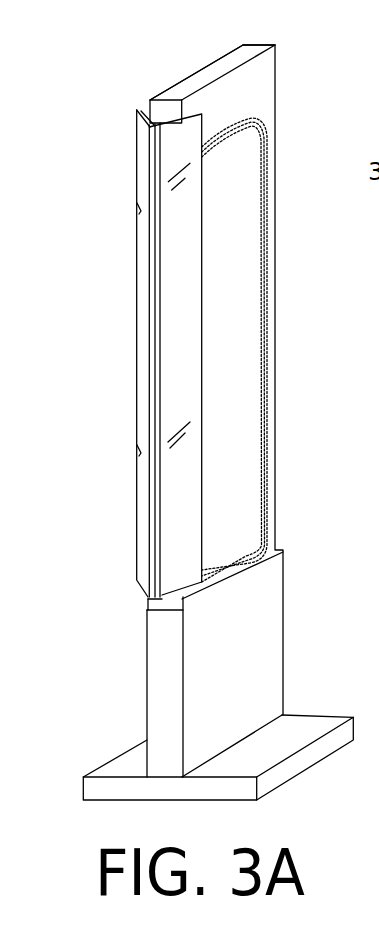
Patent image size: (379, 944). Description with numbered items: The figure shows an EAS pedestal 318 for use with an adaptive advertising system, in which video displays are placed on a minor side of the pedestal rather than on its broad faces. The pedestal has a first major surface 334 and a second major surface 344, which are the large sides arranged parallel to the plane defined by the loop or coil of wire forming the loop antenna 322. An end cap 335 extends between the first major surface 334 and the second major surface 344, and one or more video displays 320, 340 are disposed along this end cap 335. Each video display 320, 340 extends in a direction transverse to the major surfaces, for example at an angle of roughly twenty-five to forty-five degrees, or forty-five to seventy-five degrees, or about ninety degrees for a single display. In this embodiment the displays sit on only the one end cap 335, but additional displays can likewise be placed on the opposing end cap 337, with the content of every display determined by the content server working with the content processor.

The EAS pedestal 318 is at (245, 53).
The second major surface 344 is at (193, 74).
The first major surface 334 is at (258, 85).
The loop antenna 322 is at (265, 155).
The video display 320 is at (177, 310).
The video display 340 is at (138, 383).
The opposing end cap 337 is at (283, 491).
The end cap 335 is at (168, 603).